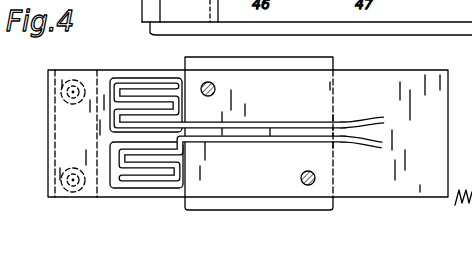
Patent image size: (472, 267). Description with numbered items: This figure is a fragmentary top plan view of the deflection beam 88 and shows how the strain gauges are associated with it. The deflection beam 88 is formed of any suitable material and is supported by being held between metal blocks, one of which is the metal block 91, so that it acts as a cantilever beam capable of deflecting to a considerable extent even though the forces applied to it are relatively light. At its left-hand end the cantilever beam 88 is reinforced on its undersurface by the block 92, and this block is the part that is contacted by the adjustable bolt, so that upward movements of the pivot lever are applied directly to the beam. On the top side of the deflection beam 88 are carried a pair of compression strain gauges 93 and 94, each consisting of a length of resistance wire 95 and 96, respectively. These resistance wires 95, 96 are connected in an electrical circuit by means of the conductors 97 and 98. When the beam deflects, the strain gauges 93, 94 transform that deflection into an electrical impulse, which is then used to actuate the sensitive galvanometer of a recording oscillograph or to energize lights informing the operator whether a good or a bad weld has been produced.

The deflection beam 88 is at (75, 117).
The metal block 91 is at (228, 211).
The block 92 is at (66, 146).
The compression strain gauge 93 is at (150, 79).
The compression strain gauge 94 is at (173, 187).
The resistance wire 95 is at (162, 100).
The resistance wire 96 is at (133, 182).
The conductor 97 is at (364, 113).
The conductor 98 is at (372, 147).